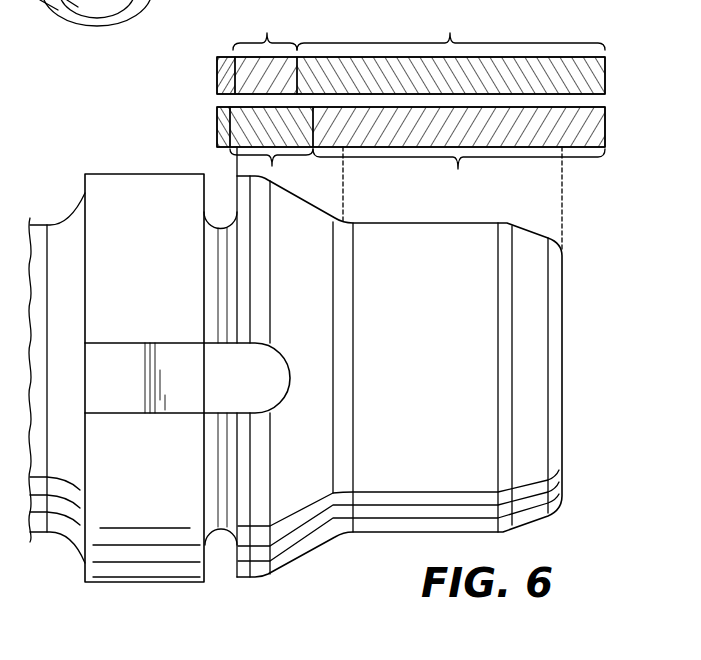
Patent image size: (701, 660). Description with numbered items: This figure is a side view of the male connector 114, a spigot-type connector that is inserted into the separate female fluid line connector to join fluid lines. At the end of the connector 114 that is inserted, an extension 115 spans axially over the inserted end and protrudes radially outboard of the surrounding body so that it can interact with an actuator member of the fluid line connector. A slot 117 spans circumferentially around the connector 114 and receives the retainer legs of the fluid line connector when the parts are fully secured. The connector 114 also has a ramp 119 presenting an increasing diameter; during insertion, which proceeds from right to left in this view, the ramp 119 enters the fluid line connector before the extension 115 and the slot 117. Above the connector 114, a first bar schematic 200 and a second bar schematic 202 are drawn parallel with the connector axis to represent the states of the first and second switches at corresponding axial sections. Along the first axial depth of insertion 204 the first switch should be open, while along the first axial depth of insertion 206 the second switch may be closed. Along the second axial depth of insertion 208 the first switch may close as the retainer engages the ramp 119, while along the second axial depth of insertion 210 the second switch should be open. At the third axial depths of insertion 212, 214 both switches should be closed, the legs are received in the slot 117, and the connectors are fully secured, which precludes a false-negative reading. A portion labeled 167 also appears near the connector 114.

The connector 114 is at (150, 590).
The extension 115 is at (115, 360).
The slot 117 is at (220, 528).
The ramp 119 is at (297, 555).
The ring 167 is at (132, 0).
The first bar schematic 200 is at (369, 49).
The second bar schematic 202 is at (366, 147).
The first axial depth of insertion 204 is at (451, 51).
The first axial depth of insertion 206 is at (459, 153).
The second axial depth of insertion 208 is at (265, 49).
The second axial depth of insertion 210 is at (272, 166).
The third axial depth of insertion 212 is at (231, 57).
The third axial depth of insertion 214 is at (222, 152).